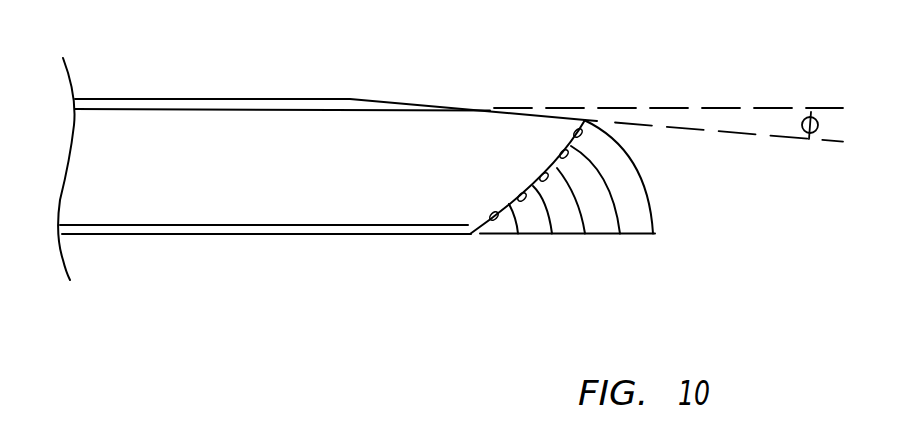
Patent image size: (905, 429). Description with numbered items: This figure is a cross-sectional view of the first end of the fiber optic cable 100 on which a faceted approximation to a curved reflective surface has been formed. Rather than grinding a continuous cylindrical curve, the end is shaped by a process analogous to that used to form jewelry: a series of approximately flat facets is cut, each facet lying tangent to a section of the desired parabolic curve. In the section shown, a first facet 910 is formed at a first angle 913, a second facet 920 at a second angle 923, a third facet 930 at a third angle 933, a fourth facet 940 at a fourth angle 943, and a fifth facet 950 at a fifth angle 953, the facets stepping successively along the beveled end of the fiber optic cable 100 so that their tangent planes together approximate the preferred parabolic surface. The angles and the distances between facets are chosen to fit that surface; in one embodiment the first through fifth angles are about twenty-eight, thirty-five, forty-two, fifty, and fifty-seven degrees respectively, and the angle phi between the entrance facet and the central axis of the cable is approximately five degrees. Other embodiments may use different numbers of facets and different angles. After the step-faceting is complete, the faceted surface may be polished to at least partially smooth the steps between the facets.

The fiber optic cable 100 is at (208, 188).
The first facet 910 is at (489, 215).
The second facet 920 is at (517, 196).
The third facet 930 is at (539, 176).
The fourth facet 940 is at (559, 153).
The fifth facet 950 is at (573, 132).
The first angle 913 is at (516, 232).
The second angle 923 is at (547, 207).
The third angle 933 is at (579, 205).
The fourth angle 943 is at (614, 200).
The fifth angle 953 is at (653, 234).